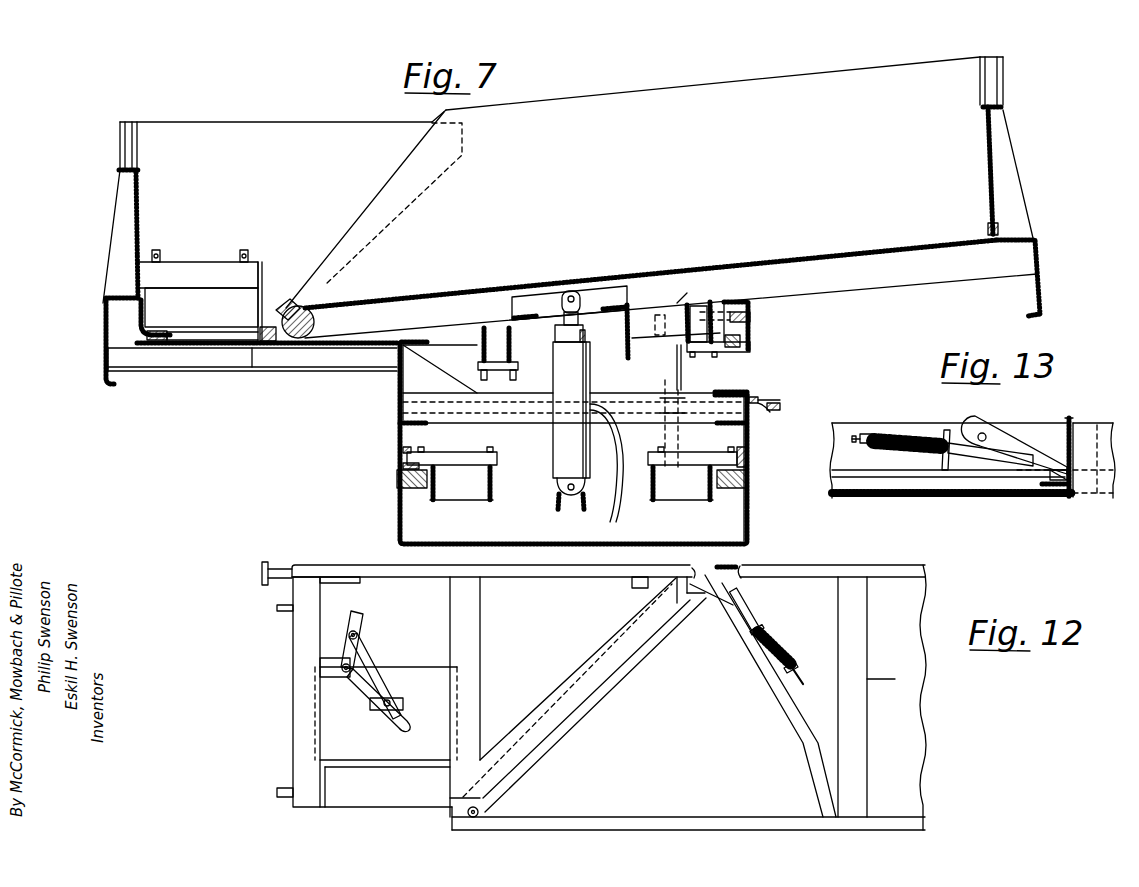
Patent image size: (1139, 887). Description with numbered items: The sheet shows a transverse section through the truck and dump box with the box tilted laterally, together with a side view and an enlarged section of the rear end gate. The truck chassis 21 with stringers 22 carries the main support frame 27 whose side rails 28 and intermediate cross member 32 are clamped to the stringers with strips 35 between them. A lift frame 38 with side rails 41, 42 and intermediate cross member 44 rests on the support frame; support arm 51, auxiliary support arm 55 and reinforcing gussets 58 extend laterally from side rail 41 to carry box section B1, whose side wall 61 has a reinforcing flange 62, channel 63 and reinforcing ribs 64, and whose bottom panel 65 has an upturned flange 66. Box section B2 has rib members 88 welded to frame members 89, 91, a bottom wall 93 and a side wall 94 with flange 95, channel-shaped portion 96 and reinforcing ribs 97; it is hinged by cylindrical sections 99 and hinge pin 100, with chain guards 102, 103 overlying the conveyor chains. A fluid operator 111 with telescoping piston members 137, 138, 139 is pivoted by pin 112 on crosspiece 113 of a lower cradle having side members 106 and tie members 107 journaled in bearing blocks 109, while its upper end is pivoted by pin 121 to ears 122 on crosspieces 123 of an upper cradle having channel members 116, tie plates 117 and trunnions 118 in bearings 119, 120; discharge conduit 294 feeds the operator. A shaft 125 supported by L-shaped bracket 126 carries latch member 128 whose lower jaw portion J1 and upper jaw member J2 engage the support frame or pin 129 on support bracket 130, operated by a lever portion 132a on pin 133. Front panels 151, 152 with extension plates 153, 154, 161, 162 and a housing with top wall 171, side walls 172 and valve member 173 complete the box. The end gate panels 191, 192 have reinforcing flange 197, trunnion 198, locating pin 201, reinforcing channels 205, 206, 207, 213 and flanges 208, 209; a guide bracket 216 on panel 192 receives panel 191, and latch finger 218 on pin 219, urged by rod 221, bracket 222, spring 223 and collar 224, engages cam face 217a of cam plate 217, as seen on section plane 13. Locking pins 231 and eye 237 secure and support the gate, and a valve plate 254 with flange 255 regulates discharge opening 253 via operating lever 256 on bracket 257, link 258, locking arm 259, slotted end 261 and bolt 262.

In FIG. 7, the chassis 21 is at (751, 521).
In FIG. 7, the stringers 22 is at (748, 498).
In FIG. 7, the main support frame 27 is at (396, 437).
In FIG. 7, the side rails 28 is at (405, 458).
In FIG. 7, the intermediate cross member 32 is at (470, 433).
In FIG. 7, the strips 35 is at (748, 481).
In FIG. 7, the lift frame 38 is at (383, 377).
In FIG. 7, the side rail 41 is at (403, 403).
In FIG. 7, the side rail 42 is at (749, 396).
In FIG. 7, the intermediate cross member 44 is at (514, 400).
In FIG. 7, the support arm 51 is at (222, 358).
In FIG. 7, the auxiliary support arm 55 is at (270, 358).
In FIG. 7, the reinforcing gussets 58 is at (397, 418).
In FIG. 7, the side wall 61 is at (134, 214).
In FIG. 7, the reinforcing flange 62 is at (120, 177).
In FIG. 7, the channel 63 is at (105, 336).
In FIG. 7, the reinforcing ribs 64 is at (113, 253).
In FIG. 7, the bottom panel 65 is at (192, 350).
In FIG. 7, the upturned flange 66 is at (150, 345).
In FIG. 7, the rib members 88 is at (866, 276).
In FIG. 7, the frame member 89 is at (752, 323).
In FIG. 7, the frame member 91 is at (480, 335).
In FIG. 7, the bottom wall 93 is at (592, 278).
In FIG. 7, the side wall 94 is at (985, 160).
In FIG. 7, the flange 95 is at (1002, 109).
In FIG. 7, the channel-shaped portion 96 is at (1038, 285).
In FIG. 7, the reinforcing ribs 97 is at (1020, 200).
In FIG. 7, the cylindrical sections 99 is at (316, 323).
In FIG. 7, the hinge pin 100 is at (328, 300).
In FIG. 7, the chain guard 102 is at (156, 318).
In FIG. 7, the chain guard 103 is at (290, 302).
In FIG. 7, the side members 106 is at (522, 490).
In FIG. 7, the tie members 107 is at (656, 482).
In FIG. 7, the bearing blocks 109 is at (741, 446).
In FIG. 7, the fluid operator 111 is at (572, 386).
In FIG. 7, the pin 112 is at (571, 497).
In FIG. 7, the crosspiece 113 is at (585, 503).
In FIG. 7, the channel members 116 is at (687, 305).
In FIG. 7, the tie plates 117 is at (709, 303).
In FIG. 7, the trunnions 118 is at (712, 356).
In FIG. 7, the bearing 119 is at (752, 351).
In FIG. 7, the bearing 120 is at (482, 372).
In FIG. 7, the pin 121 is at (570, 290).
In FIG. 7, the ears 122 is at (612, 288).
In FIG. 7, the crosspieces 123 is at (630, 307).
In FIG. 7, the shaft 125 is at (665, 420).
In FIG. 7, the L-shaped bracket 126 is at (663, 390).
In FIG. 7, the latch member 128 is at (682, 385).
In FIG. 7, the pin 129 is at (720, 306).
In FIG. 7, the support bracket 130 is at (664, 326).
In FIG. 7, the lever portion 132a is at (766, 411).
In FIG. 7, the pin 133 is at (772, 401).
In FIG. 7, the piston member 137 is at (580, 334).
In FIG. 7, the piston member 138 is at (560, 332).
In FIG. 7, the piston member 139 is at (563, 307).
In FIG. 7, the front panel 151 is at (237, 128).
In FIG. 7, the end panel 152 is at (632, 98).
In FIG. 7, the extension plate 153 is at (136, 135).
In FIG. 7, the extension plate 154 is at (121, 130).
In FIG. 7, the extension plate 161 is at (1002, 86).
In FIG. 7, the extension plate 162 is at (980, 91).
In FIG. 7, the top wall 171 is at (188, 275).
In FIG. 7, the side walls 172 is at (265, 300).
In FIG. 7, the valve member 173 is at (217, 298).
In FIG. 13, the end gate panel 191 is at (1068, 499).
In FIG. 12, the end gate panel 191 is at (548, 677).
In FIG. 13, the end gate panel 192 is at (1026, 496).
In FIG. 12, the end gate panel 192 is at (835, 580).
In FIG. 12, the reinforcing flange 197 is at (373, 572).
In FIG. 12, the trunnion 198 is at (280, 572).
In FIG. 12, the locating pin 201 is at (480, 812).
In FIG. 12, the reinforcing channel 205 is at (300, 676).
In FIG. 12, the reinforcing channel 206 is at (605, 637).
In FIG. 12, the intermediate reinforcing channel 207 is at (470, 647).
In FIG. 13, the reinforcing flange 208 is at (1087, 432).
In FIG. 12, the reinforcing flange 208 is at (892, 576).
In FIG. 12, the reinforcing flange 209 is at (884, 822).
In FIG. 12, the reinforcing channel 213 is at (888, 679).
In FIG. 13, the guide bracket 216 is at (1027, 428).
In FIG. 12, the guide bracket 216 is at (785, 690).
In FIG. 13, the cam plate 217 is at (1060, 486).
In FIG. 12, the cam plate 217 is at (683, 600).
In FIG. 13, the cam face 217a is at (1055, 480).
In FIG. 12, the cam face 217a is at (738, 567).
In FIG. 13, the latch finger 218 is at (996, 438).
In FIG. 12, the latch finger 218 is at (730, 590).
In FIG. 13, the pin 219 is at (978, 433).
In FIG. 13, the rod 221 is at (982, 456).
In FIG. 12, the rod 221 is at (752, 600).
In FIG. 13, the bracket 222 is at (945, 432).
In FIG. 12, the bracket 222 is at (766, 628).
In FIG. 13, the spring 223 is at (893, 428).
In FIG. 12, the spring 223 is at (790, 652).
In FIG. 13, the collar 224 is at (875, 432).
In FIG. 12, the collar 224 is at (800, 668).
In FIG. 12, the locking pins 231 is at (278, 793).
In FIG. 12, the eye 237 is at (280, 608).
In FIG. 12, the discharge opening 253 is at (330, 778).
In FIG. 12, the valve plate 254 is at (402, 672).
In FIG. 12, the flange 255 is at (350, 762).
In FIG. 12, the operating lever 256 is at (360, 630).
In FIG. 12, the bracket 257 is at (330, 657).
In FIG. 12, the link 258 is at (365, 652).
In FIG. 12, the locking arm 259 is at (368, 684).
In FIG. 12, the slotted end 261 is at (398, 716).
In FIG. 12, the bolt 262 is at (393, 702).
In FIG. 7, the discharge conduit 294 is at (622, 510).
In FIG. 12, the section line 13 is at (708, 565).
In FIG. 7, the box section B1 is at (362, 115).
In FIG. 7, the box section B2 is at (1022, 148).
In FIG. 7, the lower jaw portion J1 is at (650, 465).
In FIG. 7, the upper jaw member J2 is at (676, 362).